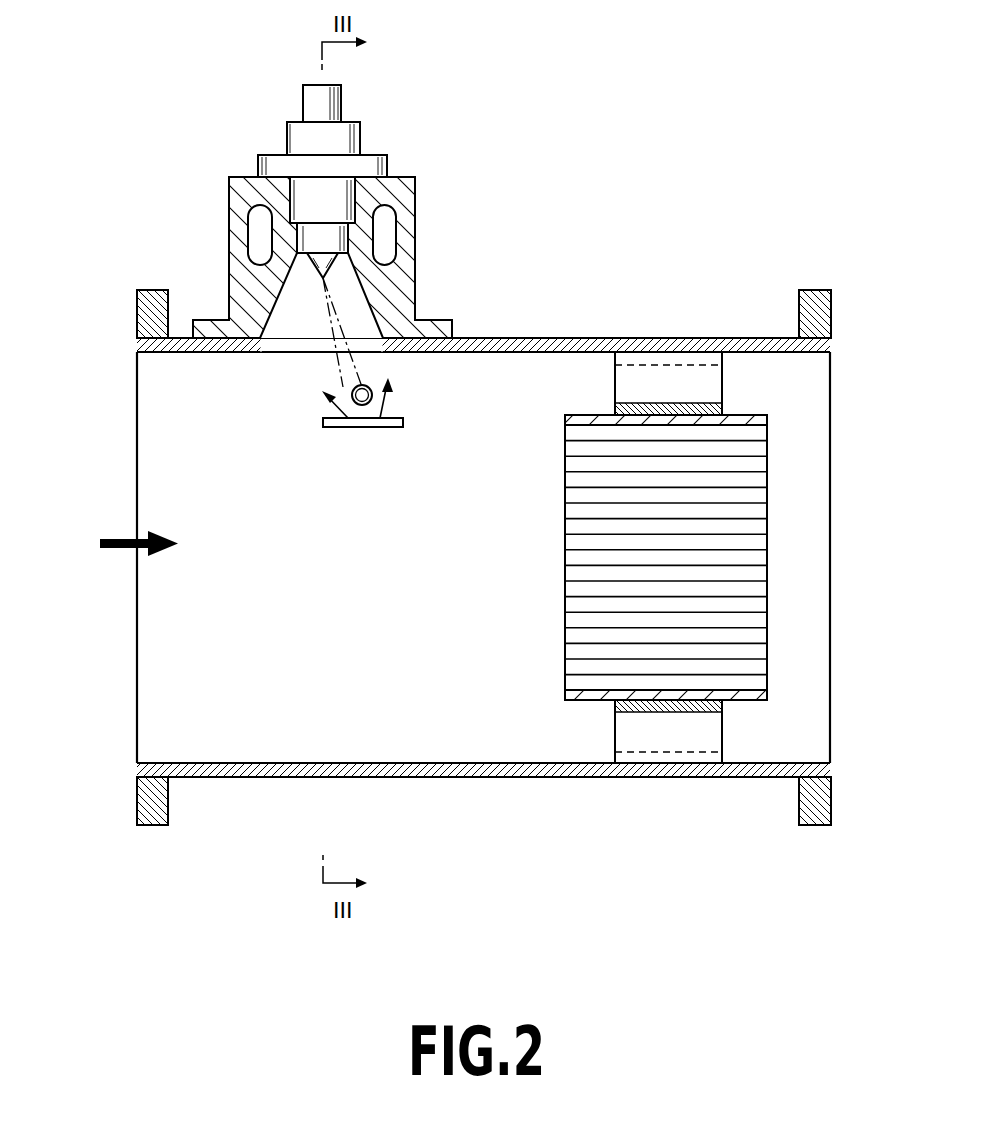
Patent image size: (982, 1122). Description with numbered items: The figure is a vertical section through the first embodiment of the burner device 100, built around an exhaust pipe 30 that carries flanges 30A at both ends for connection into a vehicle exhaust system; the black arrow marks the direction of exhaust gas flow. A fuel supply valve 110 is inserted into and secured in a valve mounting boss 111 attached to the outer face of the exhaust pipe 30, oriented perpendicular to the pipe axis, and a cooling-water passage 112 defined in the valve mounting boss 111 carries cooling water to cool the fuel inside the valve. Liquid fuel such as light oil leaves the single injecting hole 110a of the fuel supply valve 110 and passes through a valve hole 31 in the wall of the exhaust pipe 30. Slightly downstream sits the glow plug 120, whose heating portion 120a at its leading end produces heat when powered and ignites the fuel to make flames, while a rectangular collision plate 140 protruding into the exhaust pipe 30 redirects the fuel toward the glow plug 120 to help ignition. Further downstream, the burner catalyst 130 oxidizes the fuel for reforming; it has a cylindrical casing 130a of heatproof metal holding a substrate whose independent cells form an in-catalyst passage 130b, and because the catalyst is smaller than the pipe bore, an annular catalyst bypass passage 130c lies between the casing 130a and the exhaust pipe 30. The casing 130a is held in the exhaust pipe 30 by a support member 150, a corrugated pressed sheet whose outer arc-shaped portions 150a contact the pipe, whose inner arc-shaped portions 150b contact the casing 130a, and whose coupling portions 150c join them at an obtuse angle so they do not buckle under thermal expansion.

The burner device 100 is at (686, 150).
The exhaust pipe 30 is at (533, 338).
The flanges 30A is at (816, 318).
The valve hole 31 is at (273, 355).
The fuel supply valve 110 is at (347, 140).
The injecting hole 110a is at (322, 282).
The valve mounting boss 111 is at (416, 193).
The cooling-water passage 112 is at (387, 243).
The glow plug 120 is at (375, 390).
The heating portion 120a is at (352, 391).
The burner catalyst 130 is at (628, 496).
The cylindrical casing 130a is at (742, 418).
The in-catalyst passage 130b is at (580, 463).
The catalyst bypass passage 130c is at (599, 372).
The collision plate 140 is at (330, 427).
The support member 150 is at (623, 720).
The outer arc-shaped portion 150a is at (673, 757).
The inner arc-shaped portion 150b is at (653, 403).
The coupling portion 150c is at (703, 375).